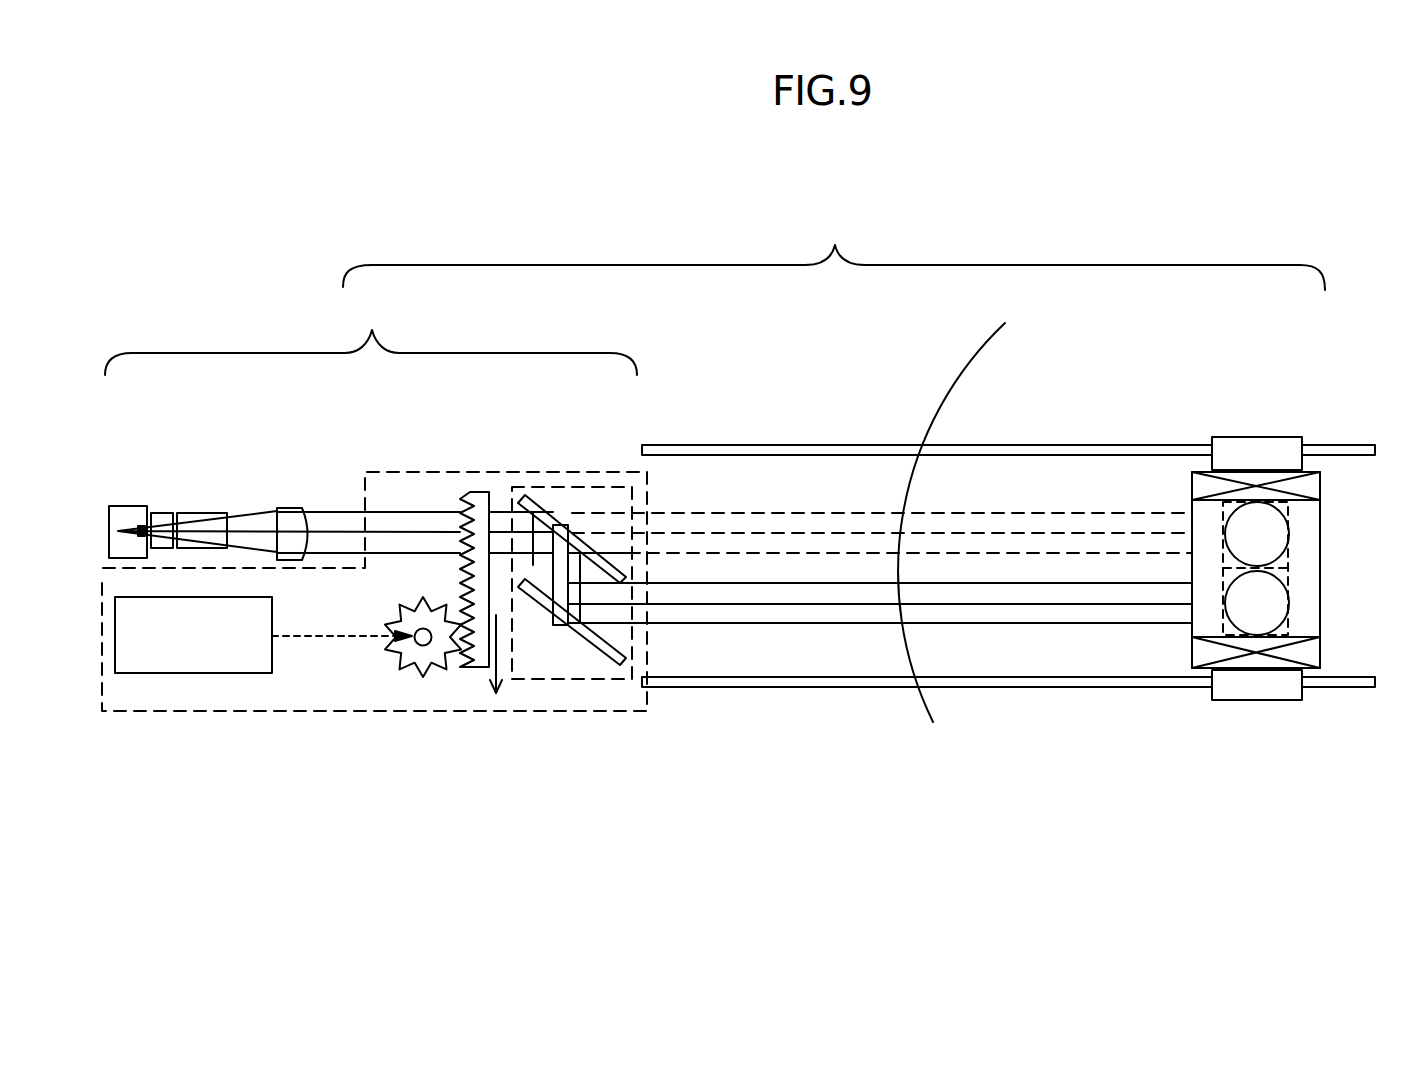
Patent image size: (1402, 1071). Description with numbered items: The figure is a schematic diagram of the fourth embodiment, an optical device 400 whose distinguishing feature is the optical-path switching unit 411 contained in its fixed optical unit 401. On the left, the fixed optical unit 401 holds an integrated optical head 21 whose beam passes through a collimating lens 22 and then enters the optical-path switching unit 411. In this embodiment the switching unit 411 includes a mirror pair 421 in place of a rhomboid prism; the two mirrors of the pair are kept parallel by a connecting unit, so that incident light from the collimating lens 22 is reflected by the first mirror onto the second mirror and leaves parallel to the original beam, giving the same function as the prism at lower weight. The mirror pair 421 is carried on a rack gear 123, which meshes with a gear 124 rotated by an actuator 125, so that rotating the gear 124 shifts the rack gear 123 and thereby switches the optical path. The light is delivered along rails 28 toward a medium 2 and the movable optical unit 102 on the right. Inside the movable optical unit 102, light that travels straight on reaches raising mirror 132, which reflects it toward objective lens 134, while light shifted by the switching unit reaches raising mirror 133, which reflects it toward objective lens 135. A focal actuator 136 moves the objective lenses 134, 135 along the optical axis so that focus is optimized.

The substrate 2 is at (944, 407).
The integrated optical head 21 is at (177, 513).
The collimating lens 22 is at (293, 508).
The guide rail 28 is at (797, 445).
The movable optical unit 102 is at (1297, 524).
The rack gear 123 is at (462, 668).
The gear 124 is at (385, 663).
The actuator 125 is at (178, 673).
The raising mirror 132 is at (1290, 508).
The raising mirror 133 is at (1290, 582).
The objective lens 134 is at (1290, 556).
The objective lens 135 is at (1290, 630).
The focal actuator 136 is at (1320, 655).
The optical device 400 is at (834, 248).
The fixed optical unit 401 is at (371, 332).
The optical-path switching unit 411 is at (440, 472).
The mirror pair 421 is at (559, 680).